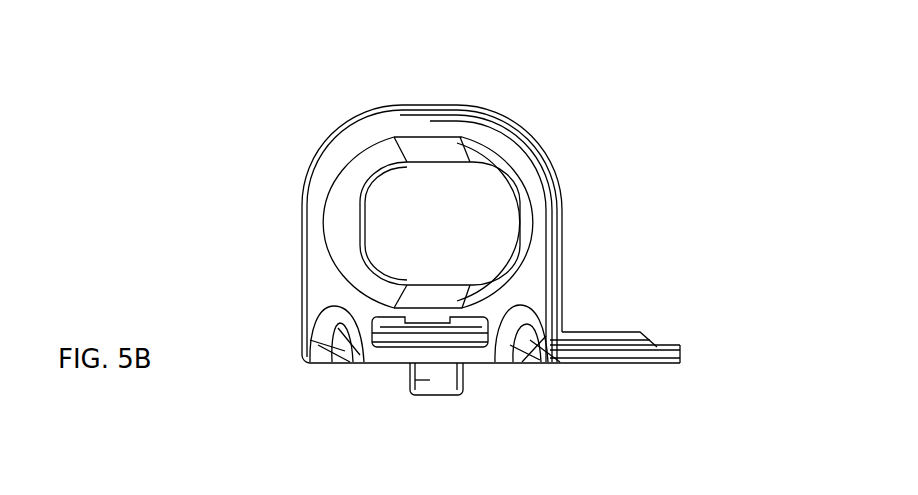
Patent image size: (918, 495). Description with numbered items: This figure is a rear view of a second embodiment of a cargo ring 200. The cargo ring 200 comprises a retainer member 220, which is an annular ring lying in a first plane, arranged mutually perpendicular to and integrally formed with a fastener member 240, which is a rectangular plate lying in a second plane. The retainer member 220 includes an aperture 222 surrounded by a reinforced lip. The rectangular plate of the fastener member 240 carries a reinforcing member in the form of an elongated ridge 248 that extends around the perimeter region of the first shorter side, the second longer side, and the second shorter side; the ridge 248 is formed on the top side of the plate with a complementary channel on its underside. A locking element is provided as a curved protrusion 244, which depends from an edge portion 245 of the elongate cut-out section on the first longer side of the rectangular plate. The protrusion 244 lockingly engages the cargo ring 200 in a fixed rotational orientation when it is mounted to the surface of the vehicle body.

The cargo ring 200 is at (330, 116).
The retainer member 220 is at (530, 176).
The aperture 222 is at (423, 235).
The fastener member 240 is at (683, 356).
The curved protrusion 244 is at (410, 383).
The edge portion 245 is at (478, 363).
The elongated ridge 248 is at (590, 331).